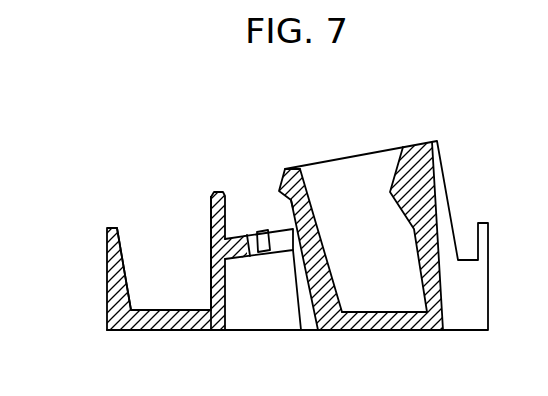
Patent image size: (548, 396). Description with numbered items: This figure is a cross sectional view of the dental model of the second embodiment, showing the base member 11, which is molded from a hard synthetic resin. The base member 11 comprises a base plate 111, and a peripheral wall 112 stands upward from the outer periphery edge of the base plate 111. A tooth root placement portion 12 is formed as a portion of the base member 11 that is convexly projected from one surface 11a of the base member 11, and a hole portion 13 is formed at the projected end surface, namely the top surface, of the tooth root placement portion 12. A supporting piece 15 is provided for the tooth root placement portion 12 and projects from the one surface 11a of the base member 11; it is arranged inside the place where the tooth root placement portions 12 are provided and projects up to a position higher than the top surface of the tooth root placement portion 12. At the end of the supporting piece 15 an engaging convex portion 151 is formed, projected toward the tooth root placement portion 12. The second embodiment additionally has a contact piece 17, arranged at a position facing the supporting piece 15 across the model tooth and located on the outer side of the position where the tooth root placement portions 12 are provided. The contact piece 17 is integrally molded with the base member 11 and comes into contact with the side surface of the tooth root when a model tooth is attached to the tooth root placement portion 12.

The base member 11 is at (441, 131).
The one surface of the base member 11a is at (155, 309).
The base plate 111 is at (408, 323).
The peripheral wall 112 is at (107, 258).
The tooth root placement portion 12 is at (227, 246).
The hole portion 13 is at (255, 248).
The supporting piece 15 is at (318, 227).
The engaging convex portion 151 is at (282, 193).
The contact piece 17 is at (212, 203).